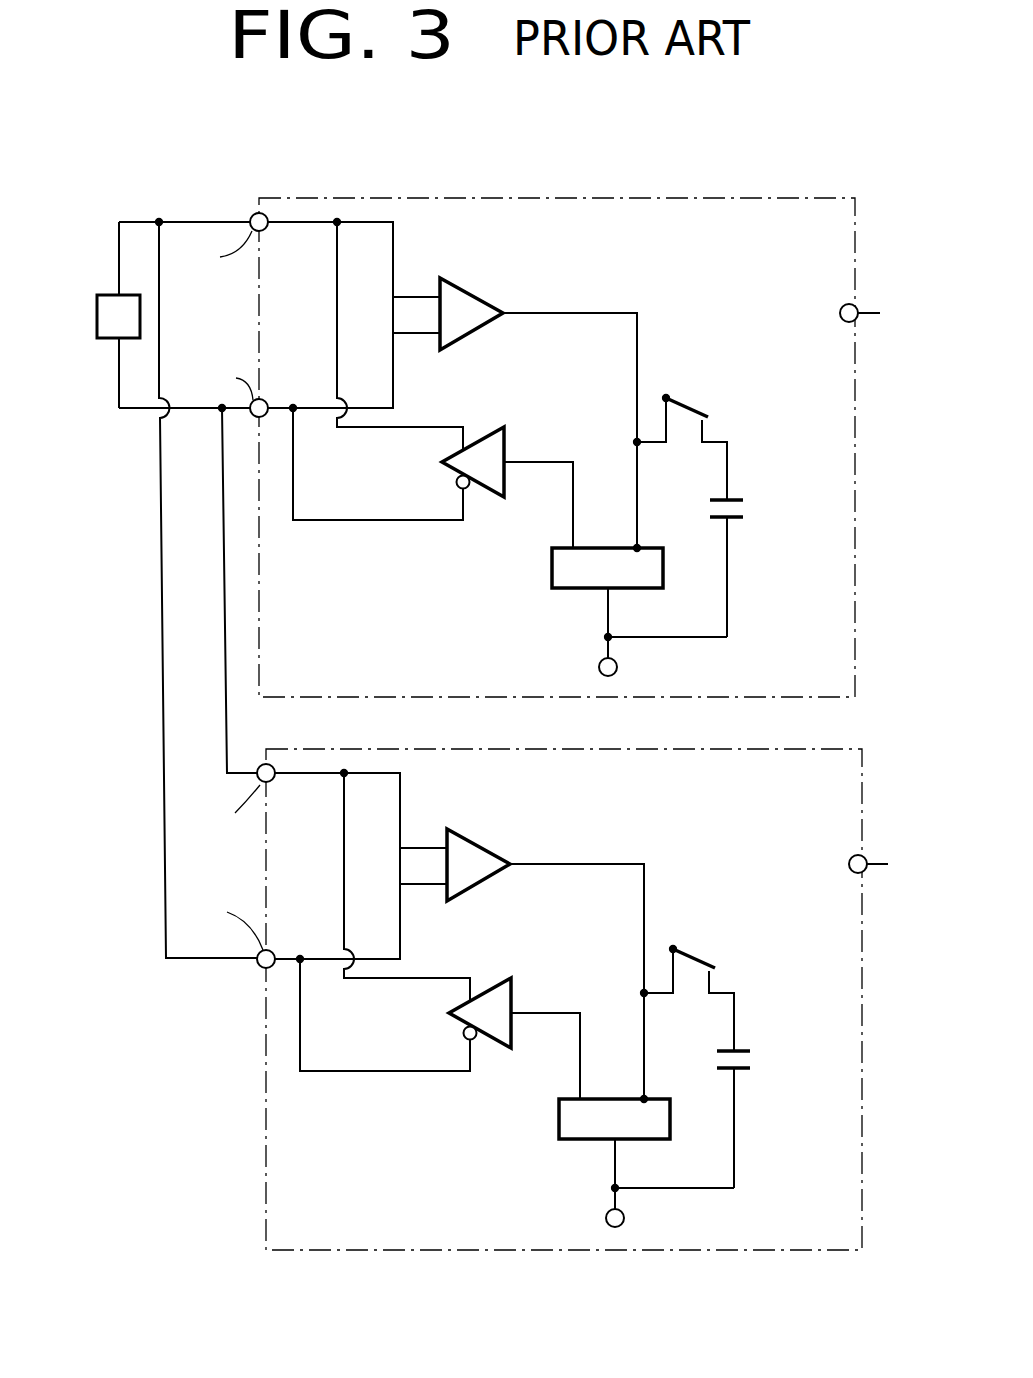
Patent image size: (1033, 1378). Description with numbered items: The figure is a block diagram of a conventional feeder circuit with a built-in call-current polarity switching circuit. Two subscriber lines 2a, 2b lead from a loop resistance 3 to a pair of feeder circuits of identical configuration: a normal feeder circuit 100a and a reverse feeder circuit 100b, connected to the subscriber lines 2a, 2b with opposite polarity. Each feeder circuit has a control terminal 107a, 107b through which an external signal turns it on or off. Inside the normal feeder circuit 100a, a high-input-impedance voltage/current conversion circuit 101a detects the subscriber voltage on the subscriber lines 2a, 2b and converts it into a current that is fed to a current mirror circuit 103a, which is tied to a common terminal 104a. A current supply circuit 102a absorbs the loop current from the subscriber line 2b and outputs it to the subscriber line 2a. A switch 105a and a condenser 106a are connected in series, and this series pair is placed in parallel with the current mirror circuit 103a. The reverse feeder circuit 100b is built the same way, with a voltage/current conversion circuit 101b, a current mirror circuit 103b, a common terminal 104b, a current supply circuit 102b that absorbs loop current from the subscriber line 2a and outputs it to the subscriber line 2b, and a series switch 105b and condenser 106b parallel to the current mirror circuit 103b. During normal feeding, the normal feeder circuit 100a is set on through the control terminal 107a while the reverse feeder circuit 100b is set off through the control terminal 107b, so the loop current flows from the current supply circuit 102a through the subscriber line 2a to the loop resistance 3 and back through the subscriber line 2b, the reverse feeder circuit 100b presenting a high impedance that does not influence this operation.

The subscriber line 2a is at (140, 218).
The subscriber line 2b is at (130, 414).
The loop resistance 3 is at (100, 293).
The normal feeder circuit 100a is at (549, 196).
The reverse feeder circuit 100b is at (525, 745).
The voltage/current conversion circuit 101a is at (477, 293).
The voltage/current conversion circuit 101b is at (547, 950).
The current supply circuit 102a is at (487, 425).
The current supply circuit 102b is at (514, 1001).
The current mirror circuit 103a is at (552, 572).
The current mirror circuit 103b is at (532, 1154).
The common terminal 104a is at (618, 667).
The common terminal 104b is at (678, 1220).
The switch 105a is at (692, 402).
The switch 105b is at (709, 969).
The condenser 106a is at (745, 508).
The condenser 106b is at (778, 1114).
The control terminal 107a is at (841, 310).
The control terminal 107b is at (790, 850).